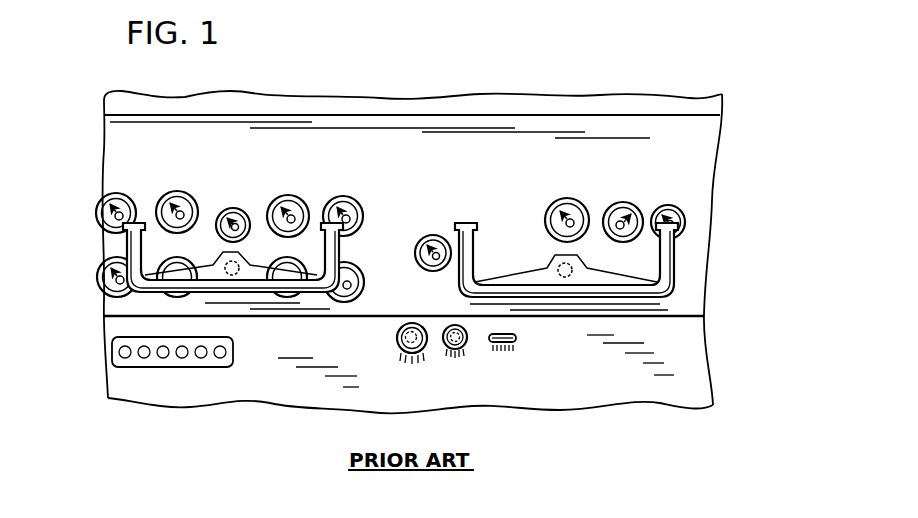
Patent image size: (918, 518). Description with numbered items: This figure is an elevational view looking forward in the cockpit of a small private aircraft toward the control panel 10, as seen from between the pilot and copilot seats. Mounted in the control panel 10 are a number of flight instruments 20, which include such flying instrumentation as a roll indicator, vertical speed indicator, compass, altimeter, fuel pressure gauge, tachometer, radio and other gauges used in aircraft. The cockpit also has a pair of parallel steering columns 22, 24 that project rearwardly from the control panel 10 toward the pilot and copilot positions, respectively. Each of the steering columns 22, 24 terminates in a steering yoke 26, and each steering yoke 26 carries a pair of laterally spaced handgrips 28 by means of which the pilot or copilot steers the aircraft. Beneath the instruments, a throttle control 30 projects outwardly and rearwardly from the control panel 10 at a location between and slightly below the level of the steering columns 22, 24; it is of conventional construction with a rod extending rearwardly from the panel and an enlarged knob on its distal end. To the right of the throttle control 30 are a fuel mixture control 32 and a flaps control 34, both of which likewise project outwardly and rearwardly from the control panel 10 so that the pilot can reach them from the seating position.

The control panel 10 is at (708, 138).
The flight instruments 20 is at (180, 194).
The steering column 22 is at (238, 262).
The steering column 24 is at (558, 263).
The steering yoke 26 is at (236, 296).
The handgrips 28 is at (130, 243).
The throttle control 30 is at (396, 340).
The fuel mixture control 32 is at (461, 351).
The flaps control 34 is at (520, 338).